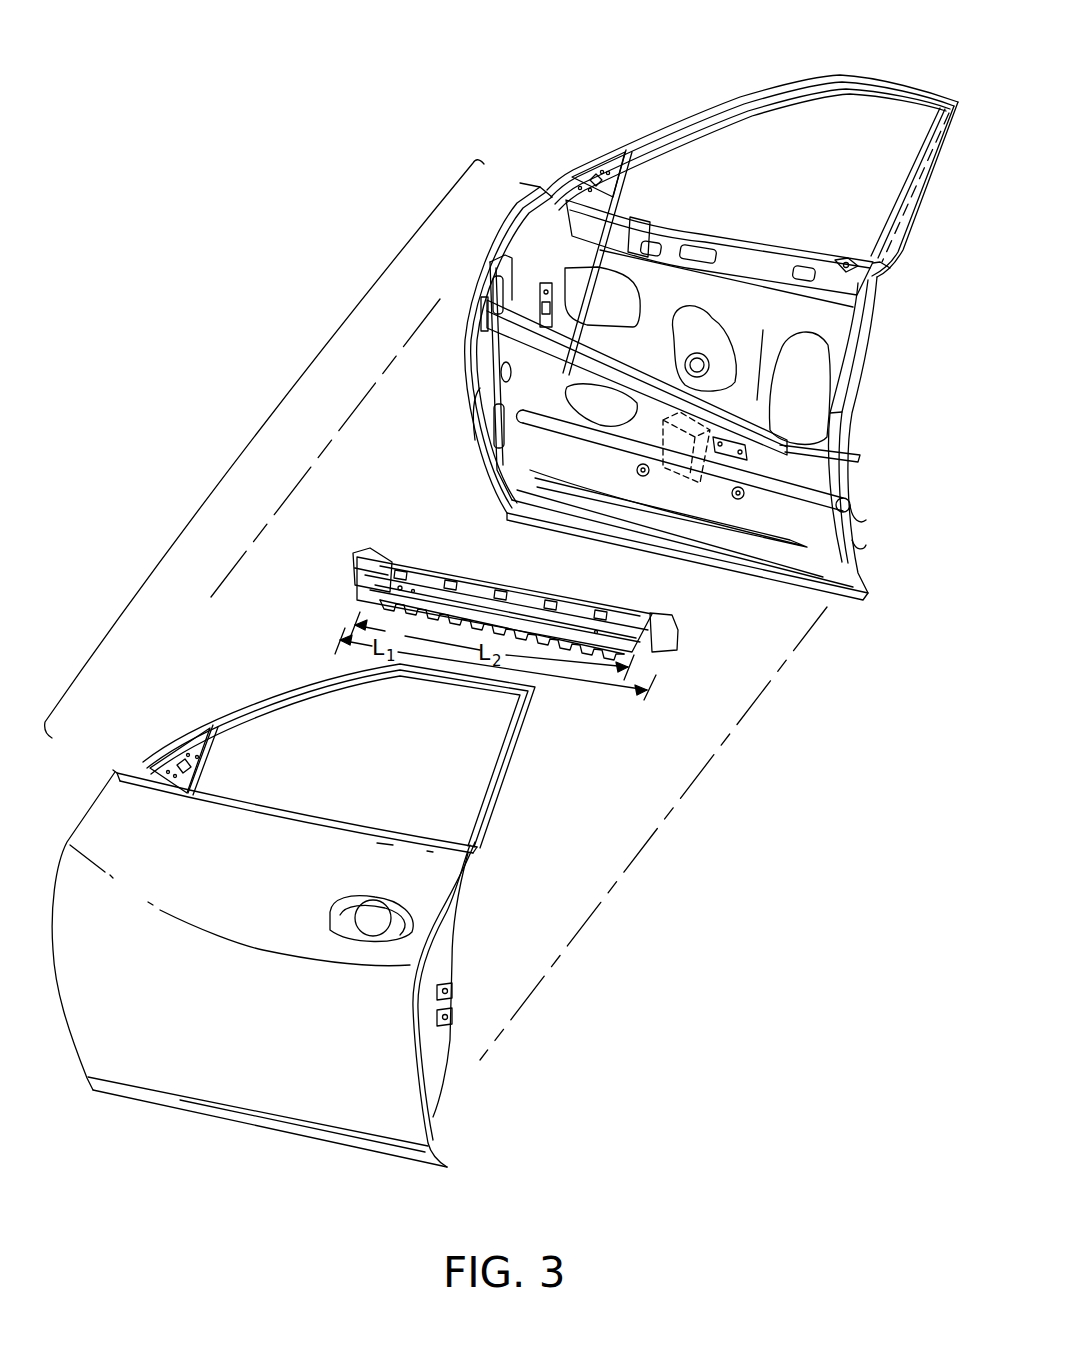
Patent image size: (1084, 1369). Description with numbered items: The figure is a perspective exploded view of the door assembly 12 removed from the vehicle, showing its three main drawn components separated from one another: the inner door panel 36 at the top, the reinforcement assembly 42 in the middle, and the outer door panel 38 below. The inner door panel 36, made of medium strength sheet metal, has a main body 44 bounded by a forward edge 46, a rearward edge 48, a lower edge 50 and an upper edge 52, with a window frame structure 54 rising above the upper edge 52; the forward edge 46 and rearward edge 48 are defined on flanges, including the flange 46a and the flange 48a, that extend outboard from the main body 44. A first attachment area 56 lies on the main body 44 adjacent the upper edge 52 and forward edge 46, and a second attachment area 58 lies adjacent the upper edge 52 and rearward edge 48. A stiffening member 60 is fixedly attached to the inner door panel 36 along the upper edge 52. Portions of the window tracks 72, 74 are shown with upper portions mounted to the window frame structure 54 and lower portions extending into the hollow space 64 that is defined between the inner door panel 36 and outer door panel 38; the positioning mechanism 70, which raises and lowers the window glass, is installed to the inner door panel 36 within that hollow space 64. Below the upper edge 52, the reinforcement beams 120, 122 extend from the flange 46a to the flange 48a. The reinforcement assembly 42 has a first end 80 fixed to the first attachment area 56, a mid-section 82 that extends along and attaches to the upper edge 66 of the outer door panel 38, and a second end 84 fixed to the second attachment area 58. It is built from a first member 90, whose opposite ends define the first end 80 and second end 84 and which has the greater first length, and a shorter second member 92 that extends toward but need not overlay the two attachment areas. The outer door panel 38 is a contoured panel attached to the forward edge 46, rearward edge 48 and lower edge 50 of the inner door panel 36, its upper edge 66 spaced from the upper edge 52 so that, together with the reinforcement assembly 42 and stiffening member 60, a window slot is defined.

The door assembly 12 is at (244, 449).
The inner door panel 36 is at (492, 230).
The outer door panel 38 is at (95, 794).
The reinforcement assembly 42 is at (436, 578).
The main body 44 is at (724, 300).
The forward edge 46 is at (466, 370).
The flange 46a is at (480, 388).
The rearward edge 48 is at (836, 400).
The flange 48a is at (848, 363).
The lower edge 50 is at (713, 560).
The upper edge 52 is at (810, 258).
The window frame structure 54 is at (752, 112).
The first attachment area 56 is at (548, 195).
The second attachment area 58 is at (876, 283).
The stiffening member 60 is at (673, 242).
The hollow space 64 is at (770, 320).
The upper edge 66 is at (360, 826).
The positioning mechanism 70 is at (672, 492).
The window track 72 is at (618, 178).
The window track 74 is at (900, 170).
The first end 80 is at (355, 578).
The mid-section 82 is at (568, 600).
The second end 84 is at (668, 636).
The first member 90 is at (506, 598).
The second member 92 is at (578, 626).
The reinforcement beam 120 is at (583, 362).
The reinforcement beam 122 is at (606, 438).